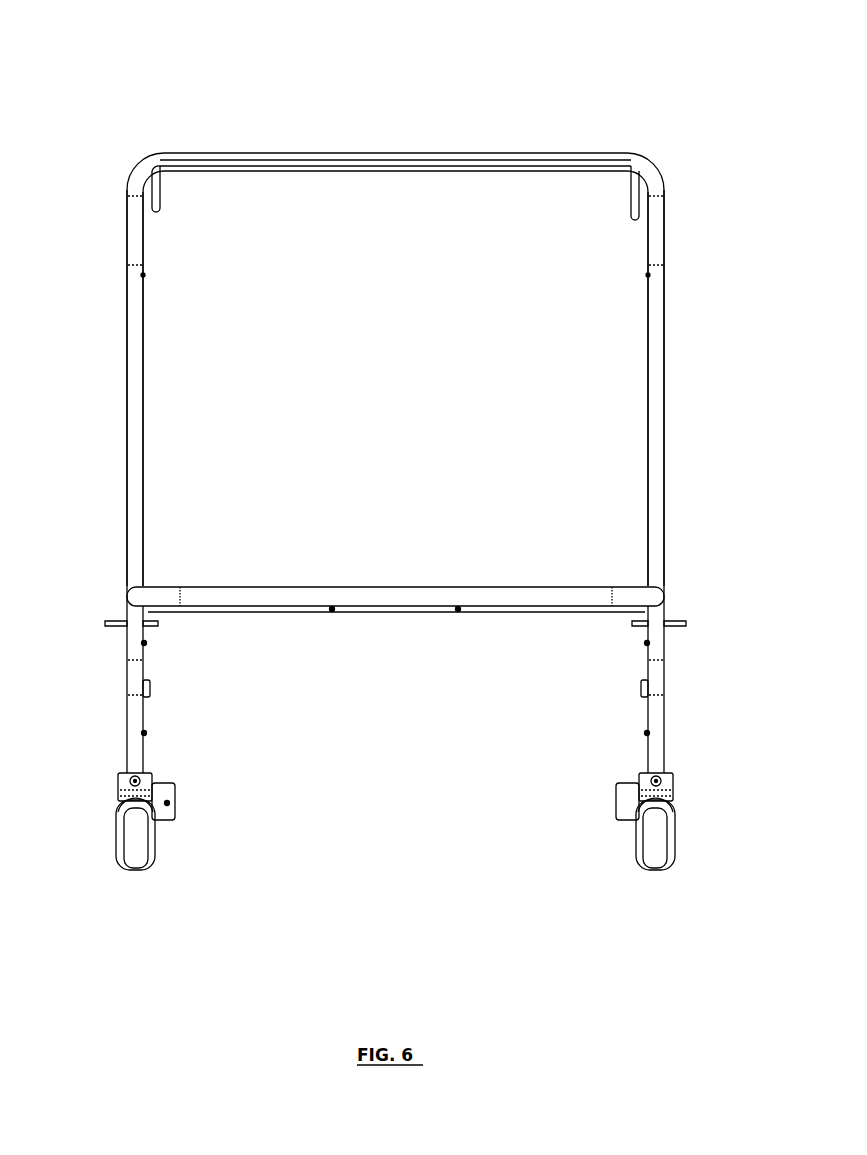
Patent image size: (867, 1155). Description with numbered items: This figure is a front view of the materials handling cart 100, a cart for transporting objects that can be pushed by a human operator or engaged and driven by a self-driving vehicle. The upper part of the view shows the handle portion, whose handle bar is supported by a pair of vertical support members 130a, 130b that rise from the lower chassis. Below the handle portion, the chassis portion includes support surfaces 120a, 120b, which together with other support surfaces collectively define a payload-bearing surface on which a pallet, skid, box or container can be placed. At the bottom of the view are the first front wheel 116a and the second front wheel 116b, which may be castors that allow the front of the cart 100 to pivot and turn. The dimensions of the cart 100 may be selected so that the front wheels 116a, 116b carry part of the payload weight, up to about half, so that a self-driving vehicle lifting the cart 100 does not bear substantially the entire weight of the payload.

The materials handling cart 100 is at (487, 71).
The vertical support member 130a is at (128, 383).
The vertical support member 130b is at (653, 385).
The support surface 120a is at (155, 592).
The support surface 120b is at (633, 592).
The first front wheel 116a is at (132, 848).
The second front wheel 116b is at (656, 850).